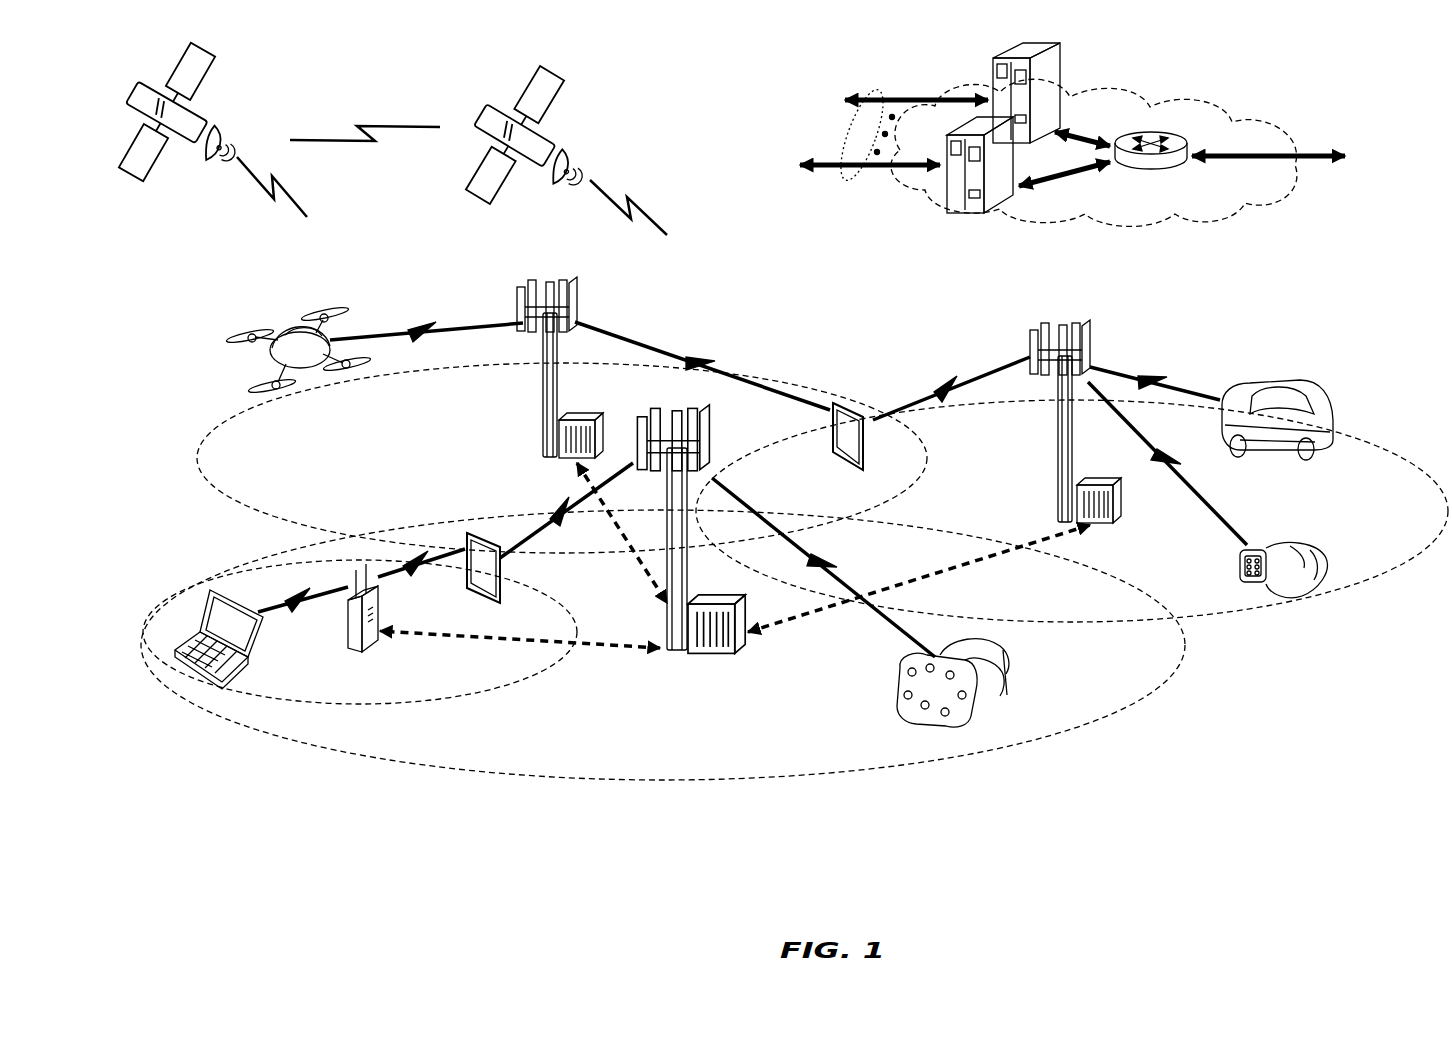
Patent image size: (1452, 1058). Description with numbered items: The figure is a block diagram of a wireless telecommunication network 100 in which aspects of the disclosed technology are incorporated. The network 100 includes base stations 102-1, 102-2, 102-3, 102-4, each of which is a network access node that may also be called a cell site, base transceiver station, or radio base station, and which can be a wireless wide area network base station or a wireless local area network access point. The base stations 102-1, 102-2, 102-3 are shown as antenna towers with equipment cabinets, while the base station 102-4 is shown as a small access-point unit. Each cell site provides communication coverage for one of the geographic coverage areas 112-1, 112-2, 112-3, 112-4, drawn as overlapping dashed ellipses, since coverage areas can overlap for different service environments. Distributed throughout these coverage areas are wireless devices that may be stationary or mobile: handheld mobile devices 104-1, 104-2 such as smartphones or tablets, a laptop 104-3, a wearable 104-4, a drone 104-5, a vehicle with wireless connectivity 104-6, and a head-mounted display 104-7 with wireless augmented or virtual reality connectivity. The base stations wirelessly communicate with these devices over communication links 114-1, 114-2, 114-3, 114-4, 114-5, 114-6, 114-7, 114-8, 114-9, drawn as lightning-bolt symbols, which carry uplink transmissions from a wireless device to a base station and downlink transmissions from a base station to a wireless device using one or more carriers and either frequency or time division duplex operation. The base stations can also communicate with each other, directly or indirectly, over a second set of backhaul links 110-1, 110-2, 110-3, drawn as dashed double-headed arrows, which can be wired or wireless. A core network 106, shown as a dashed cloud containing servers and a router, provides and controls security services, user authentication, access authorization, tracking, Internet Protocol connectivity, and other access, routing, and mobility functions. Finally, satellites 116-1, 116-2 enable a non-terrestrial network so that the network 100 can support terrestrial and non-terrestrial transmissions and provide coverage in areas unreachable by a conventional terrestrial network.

The wireless telecommunication network 100 is at (1380, 110).
The base station 102-1 is at (672, 655).
The base station 102-2 is at (544, 405).
The base station 102-3 is at (1058, 444).
The base station 102-4 is at (348, 636).
The handheld mobile device 104-1 is at (499, 580).
The handheld mobile device 104-2 is at (833, 440).
The laptop 104-3 is at (198, 678).
The wearable 104-4 is at (1262, 549).
The drone 104-5 is at (308, 374).
The vehicle with wireless connectivity 104-6 is at (1297, 393).
The head-mounted display 104-7 is at (998, 684).
The core network 106 is at (1182, 222).
The backhaul link 110-1 is at (422, 636).
The backhaul link 110-2 is at (977, 568).
The backhaul link 110-3 is at (641, 562).
The geographic coverage area 112-1 is at (605, 780).
The geographic coverage area 112-2 is at (489, 691).
The geographic coverage area 112-3 is at (258, 511).
The geographic coverage area 112-4 is at (1366, 442).
The communication link 114-1 is at (836, 566).
The communication link 114-2 is at (566, 512).
The communication link 114-3 is at (277, 611).
The communication link 114-4 is at (422, 576).
The communication link 114-5 is at (430, 333).
The communication link 114-6 is at (705, 362).
The communication link 114-7 is at (951, 383).
The communication link 114-8 is at (1185, 478).
The communication link 114-9 is at (1153, 373).
The satellite 116-1 is at (224, 122).
The satellite 116-2 is at (573, 148).